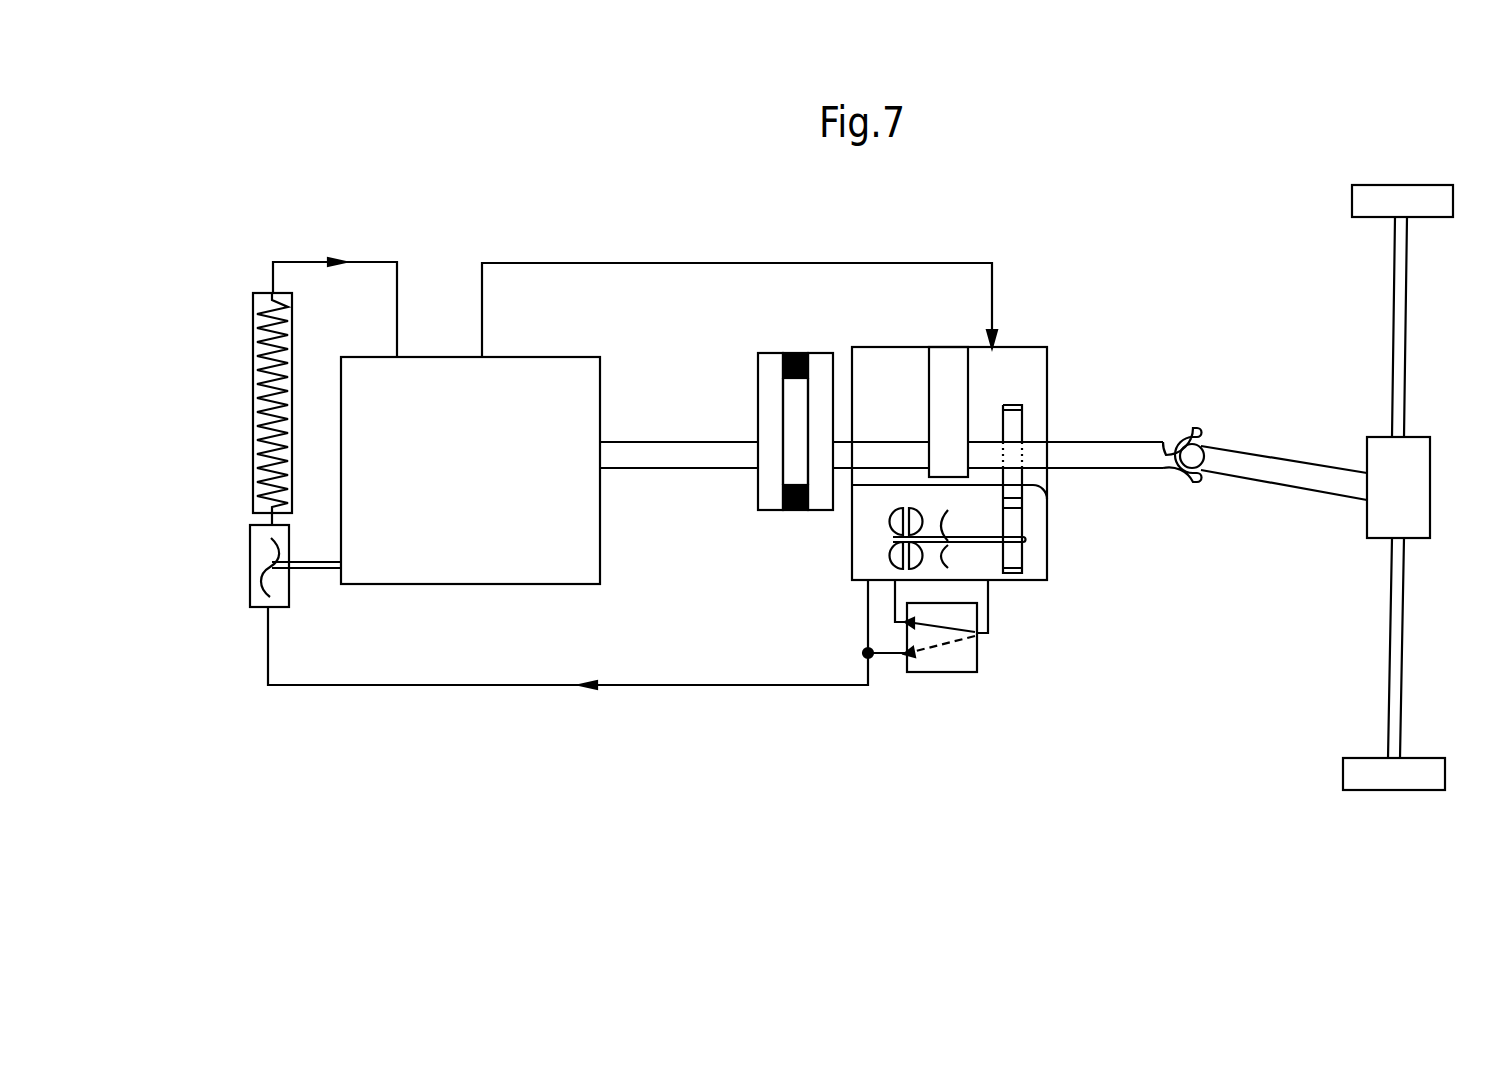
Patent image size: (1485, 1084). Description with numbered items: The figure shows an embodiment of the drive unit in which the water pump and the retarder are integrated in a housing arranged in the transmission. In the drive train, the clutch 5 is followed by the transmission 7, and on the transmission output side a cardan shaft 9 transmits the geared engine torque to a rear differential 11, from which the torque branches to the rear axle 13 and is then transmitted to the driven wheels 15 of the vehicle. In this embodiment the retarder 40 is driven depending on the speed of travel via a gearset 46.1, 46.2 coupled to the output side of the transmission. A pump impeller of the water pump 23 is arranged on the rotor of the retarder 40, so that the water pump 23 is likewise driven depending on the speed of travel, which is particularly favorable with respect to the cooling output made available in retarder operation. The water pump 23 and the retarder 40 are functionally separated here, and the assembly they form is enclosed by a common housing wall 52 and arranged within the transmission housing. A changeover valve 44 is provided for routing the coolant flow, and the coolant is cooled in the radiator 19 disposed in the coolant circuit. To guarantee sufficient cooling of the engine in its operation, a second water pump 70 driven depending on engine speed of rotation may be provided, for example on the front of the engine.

The clutch 5 is at (785, 352).
The transmission 7 is at (947, 367).
The cardan shaft 9 is at (1145, 457).
The rear differential 11 is at (1403, 505).
The rear axle 13 is at (1395, 627).
The driven wheels 15 is at (1403, 775).
The radiator 19 is at (266, 446).
The water pump 23 is at (948, 562).
The retarder 40 is at (883, 553).
The changeover valve 44 is at (947, 653).
The gearset 46.1 is at (1013, 558).
The gearset 46.2 is at (1017, 430).
The common housing wall 52 is at (890, 483).
The second water pump 70 is at (258, 587).